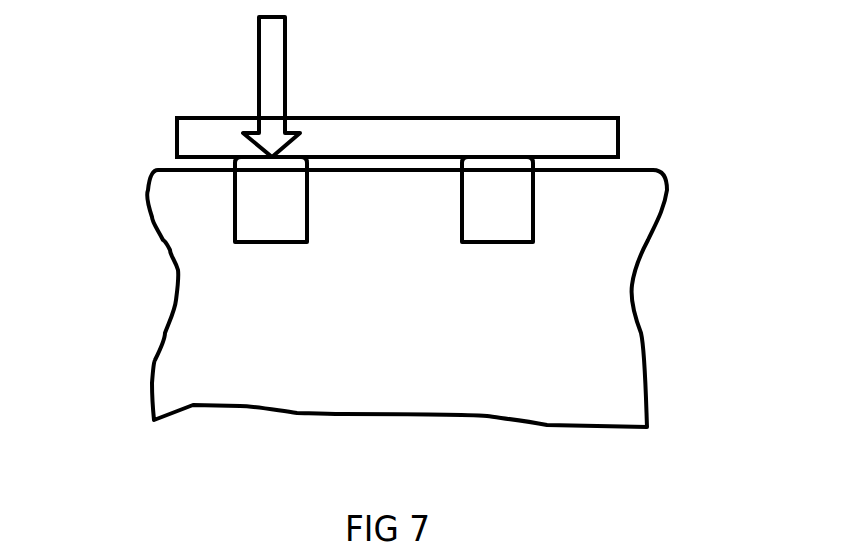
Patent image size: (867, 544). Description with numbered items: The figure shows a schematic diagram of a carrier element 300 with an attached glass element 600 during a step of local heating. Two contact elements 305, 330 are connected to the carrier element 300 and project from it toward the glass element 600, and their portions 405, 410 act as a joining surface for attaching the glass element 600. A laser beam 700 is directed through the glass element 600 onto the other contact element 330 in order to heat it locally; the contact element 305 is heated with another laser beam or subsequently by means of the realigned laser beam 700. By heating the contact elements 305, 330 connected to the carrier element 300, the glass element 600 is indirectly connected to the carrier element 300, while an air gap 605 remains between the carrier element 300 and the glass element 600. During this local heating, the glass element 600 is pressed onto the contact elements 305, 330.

The carrier element 300 is at (421, 387).
The contact element 305 is at (533, 223).
The other contact element 330 is at (235, 217).
The portion 405 is at (497, 162).
The portion 410 is at (248, 158).
The glass element 600 is at (388, 118).
The air gap 605 is at (411, 126).
The laser beam 700 is at (259, 60).